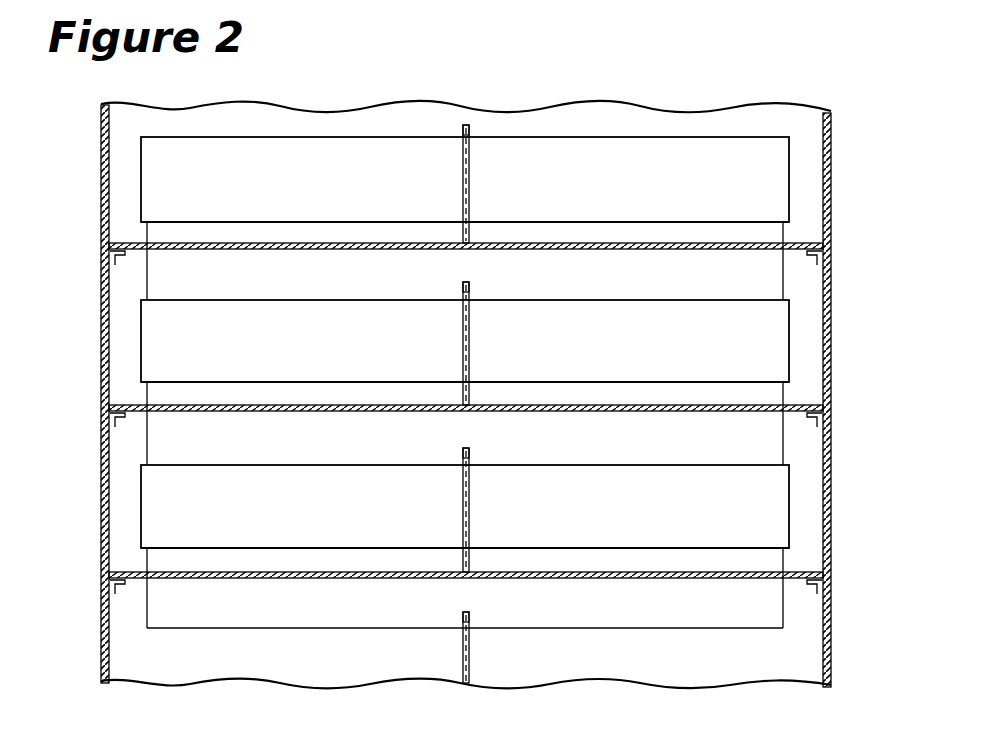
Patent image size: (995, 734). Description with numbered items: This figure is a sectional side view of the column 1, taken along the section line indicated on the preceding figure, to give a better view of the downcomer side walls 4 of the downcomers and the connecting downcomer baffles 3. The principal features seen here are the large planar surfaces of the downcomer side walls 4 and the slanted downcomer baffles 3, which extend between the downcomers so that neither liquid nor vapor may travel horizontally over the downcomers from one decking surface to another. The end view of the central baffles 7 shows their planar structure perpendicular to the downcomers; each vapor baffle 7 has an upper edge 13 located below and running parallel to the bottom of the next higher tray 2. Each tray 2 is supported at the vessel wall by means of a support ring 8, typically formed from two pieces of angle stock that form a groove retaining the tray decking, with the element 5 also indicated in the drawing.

The column 1 is at (838, 210).
The tray 2 is at (466, 384).
The downcomer baffle 3 is at (465, 332).
The downcomer side wall 4 is at (770, 288).
The panel lower edge 5 is at (465, 363).
The central baffle 7 is at (459, 404).
The support ring 8 is at (115, 258).
The upper edge 13 is at (449, 345).